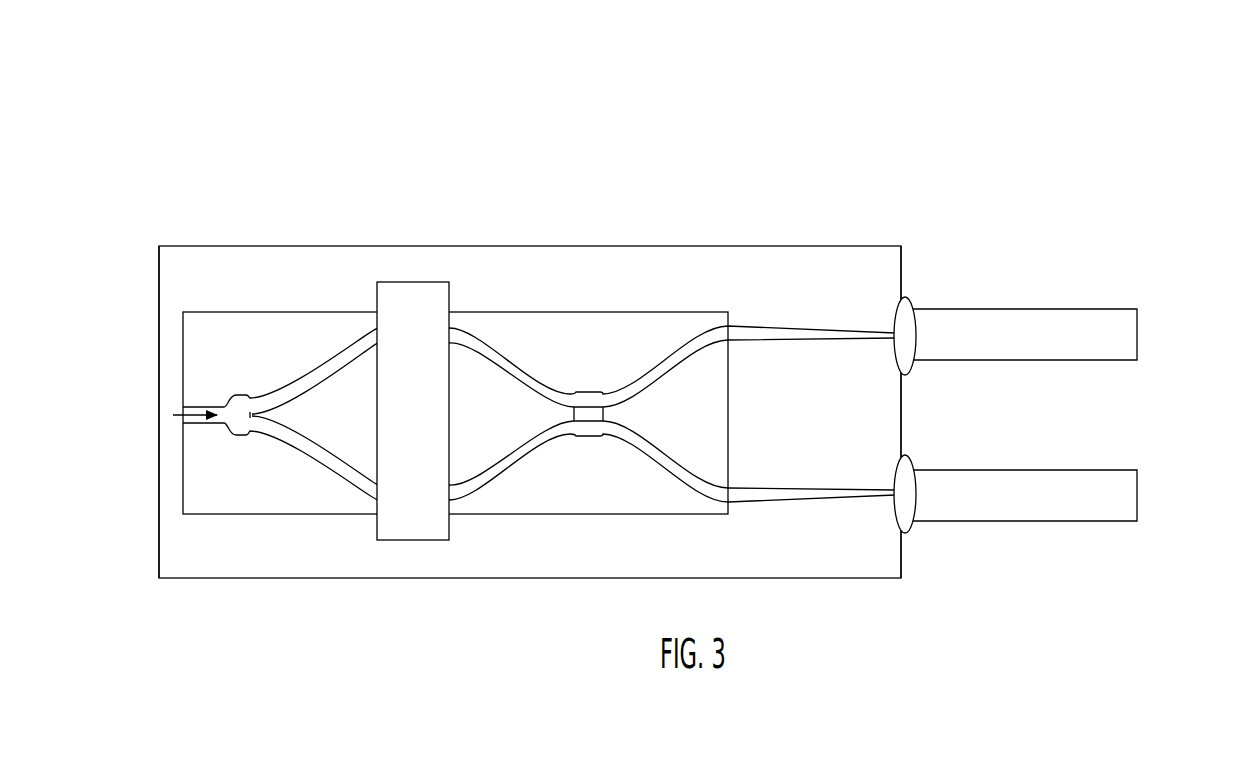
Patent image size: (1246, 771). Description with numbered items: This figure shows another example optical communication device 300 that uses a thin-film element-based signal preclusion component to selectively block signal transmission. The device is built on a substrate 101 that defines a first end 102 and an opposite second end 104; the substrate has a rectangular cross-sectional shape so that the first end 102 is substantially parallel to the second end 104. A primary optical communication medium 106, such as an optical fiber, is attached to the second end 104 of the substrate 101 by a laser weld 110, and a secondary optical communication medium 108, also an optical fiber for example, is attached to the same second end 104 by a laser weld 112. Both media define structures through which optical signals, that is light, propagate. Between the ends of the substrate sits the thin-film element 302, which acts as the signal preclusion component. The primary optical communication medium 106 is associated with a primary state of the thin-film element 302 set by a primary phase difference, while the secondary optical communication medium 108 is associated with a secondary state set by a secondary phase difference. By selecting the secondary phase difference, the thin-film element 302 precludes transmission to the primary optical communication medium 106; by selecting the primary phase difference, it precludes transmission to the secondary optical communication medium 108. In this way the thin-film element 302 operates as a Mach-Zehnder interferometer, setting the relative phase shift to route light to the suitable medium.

The optical communication device 300 is at (131, 107).
The substrate 101 is at (261, 236).
The first end 102 is at (157, 293).
The second end 104 is at (903, 258).
The primary optical communication medium 106 is at (1146, 302).
The secondary optical communication medium 108 is at (1141, 492).
The weld 110 is at (913, 366).
The weld 112 is at (913, 532).
The thin-film element 302 is at (431, 279).